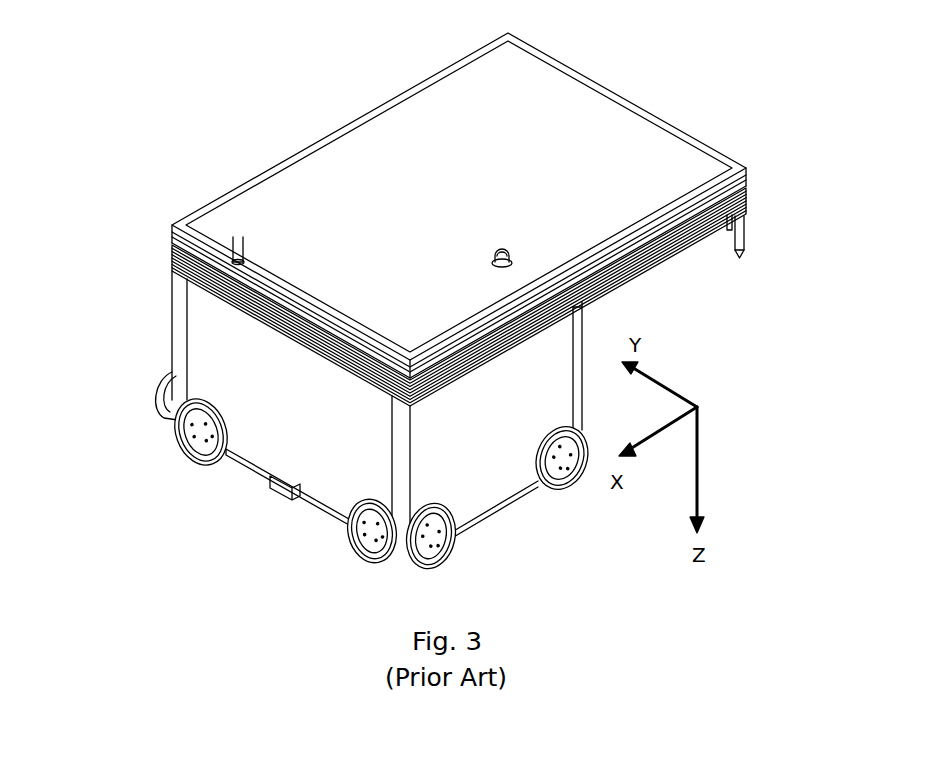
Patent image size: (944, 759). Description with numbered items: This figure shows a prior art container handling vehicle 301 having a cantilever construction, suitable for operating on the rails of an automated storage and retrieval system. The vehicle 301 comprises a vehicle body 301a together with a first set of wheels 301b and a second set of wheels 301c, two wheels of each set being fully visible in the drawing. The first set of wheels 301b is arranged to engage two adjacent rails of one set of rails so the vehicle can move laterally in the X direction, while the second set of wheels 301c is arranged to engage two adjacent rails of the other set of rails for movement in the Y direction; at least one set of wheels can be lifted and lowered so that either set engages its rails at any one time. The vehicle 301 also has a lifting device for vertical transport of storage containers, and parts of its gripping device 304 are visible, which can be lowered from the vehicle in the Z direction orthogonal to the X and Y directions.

The container handling vehicle 301 is at (200, 133).
The vehicle body 301a is at (183, 250).
The first set of wheels 301b is at (527, 517).
The second set of wheels 301c is at (233, 497).
The gripping device 304 is at (750, 246).